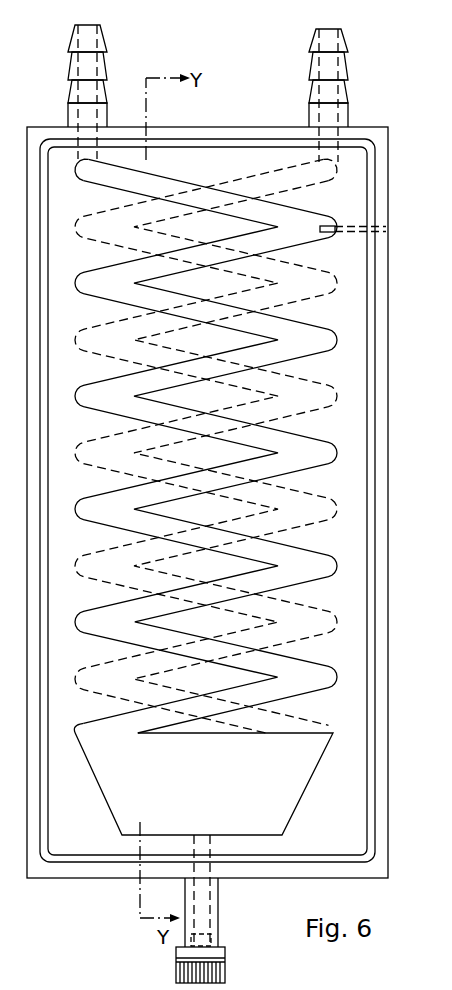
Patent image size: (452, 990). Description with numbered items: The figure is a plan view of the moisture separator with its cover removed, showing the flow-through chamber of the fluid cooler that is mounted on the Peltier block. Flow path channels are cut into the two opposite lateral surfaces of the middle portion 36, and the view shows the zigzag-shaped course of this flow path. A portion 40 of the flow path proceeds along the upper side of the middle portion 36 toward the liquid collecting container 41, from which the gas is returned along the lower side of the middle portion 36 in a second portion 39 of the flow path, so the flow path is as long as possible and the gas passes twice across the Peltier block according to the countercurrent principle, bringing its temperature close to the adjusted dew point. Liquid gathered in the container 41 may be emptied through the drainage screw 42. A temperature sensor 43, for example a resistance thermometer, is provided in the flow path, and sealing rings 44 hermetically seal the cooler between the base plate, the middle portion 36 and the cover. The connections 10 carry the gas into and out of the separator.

The connecting hose fitting 10 is at (73, 63).
The middle portion 36 is at (386, 155).
The second portion of the flow path 39 is at (332, 398).
The portion of the flow path 40 is at (338, 342).
The liquid collecting container 41 is at (300, 775).
The drainage screw 42 is at (226, 967).
The temperature sensor 43 is at (387, 229).
The sealing rings 44 is at (372, 590).